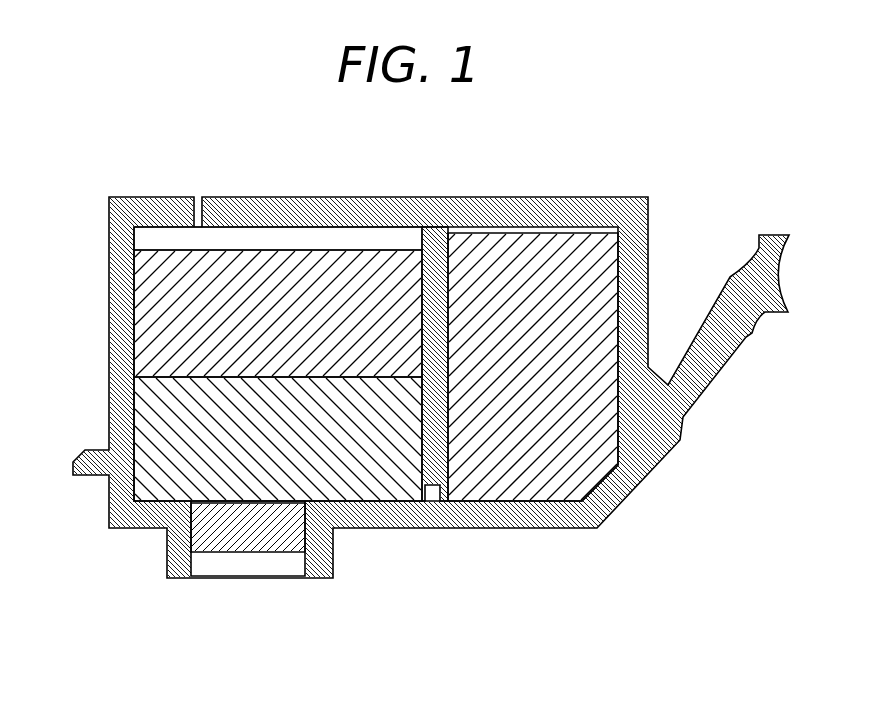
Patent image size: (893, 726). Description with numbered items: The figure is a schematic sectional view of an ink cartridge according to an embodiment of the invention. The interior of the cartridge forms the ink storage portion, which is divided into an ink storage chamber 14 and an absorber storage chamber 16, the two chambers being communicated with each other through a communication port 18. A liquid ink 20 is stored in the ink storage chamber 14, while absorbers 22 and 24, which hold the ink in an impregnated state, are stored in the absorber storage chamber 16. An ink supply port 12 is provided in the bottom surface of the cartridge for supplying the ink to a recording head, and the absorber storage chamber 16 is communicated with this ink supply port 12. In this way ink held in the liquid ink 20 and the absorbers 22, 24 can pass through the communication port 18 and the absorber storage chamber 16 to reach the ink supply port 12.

The ink supply port 12 is at (257, 566).
The ink storage chamber 14 is at (565, 232).
The absorber storage chamber 16 is at (268, 240).
The communication port 18 is at (430, 494).
The liquid ink 20 is at (555, 495).
The absorber 22 is at (152, 402).
The absorber 24 is at (130, 312).